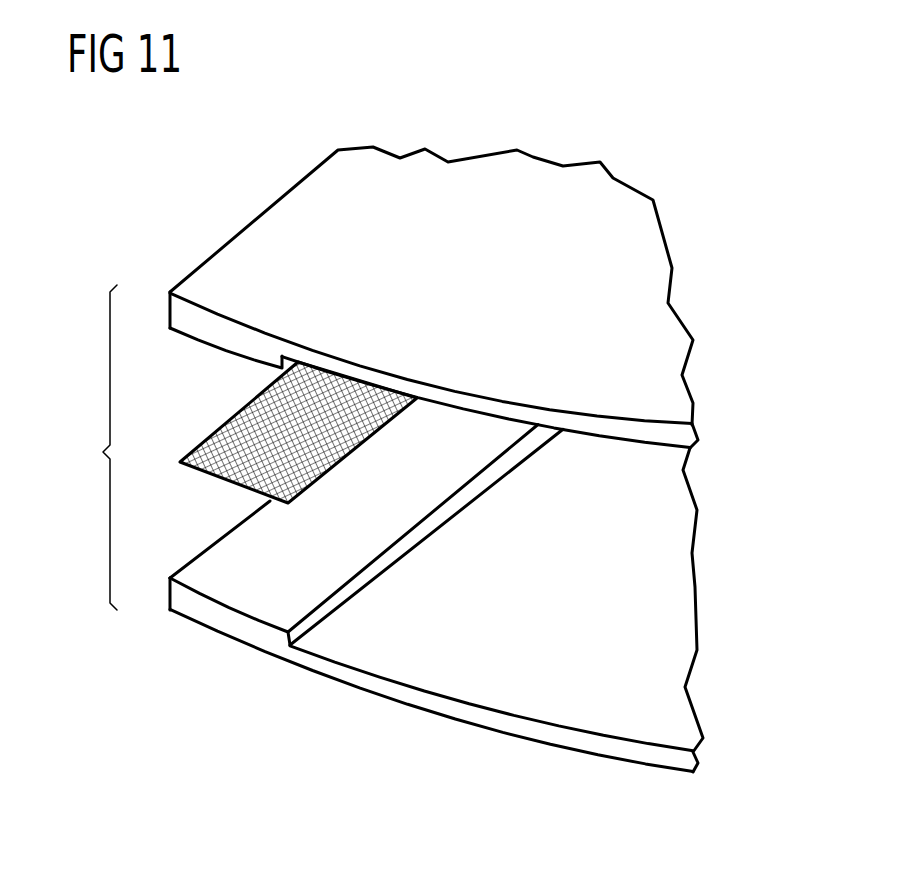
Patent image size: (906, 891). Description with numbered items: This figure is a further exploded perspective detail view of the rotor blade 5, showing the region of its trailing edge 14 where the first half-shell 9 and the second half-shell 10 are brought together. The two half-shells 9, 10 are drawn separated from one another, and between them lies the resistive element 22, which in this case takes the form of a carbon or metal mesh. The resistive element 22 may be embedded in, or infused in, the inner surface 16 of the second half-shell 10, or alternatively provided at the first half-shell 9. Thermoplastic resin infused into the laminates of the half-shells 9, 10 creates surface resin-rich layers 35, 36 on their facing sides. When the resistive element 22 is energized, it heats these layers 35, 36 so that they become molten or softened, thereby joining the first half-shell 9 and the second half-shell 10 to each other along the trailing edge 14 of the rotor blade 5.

The rotor blade 5 is at (109, 177).
The first half-shell 9 is at (543, 146).
The second half-shell 10 is at (359, 704).
The trailing edge 14 is at (95, 447).
The inner surface 16 is at (679, 602).
The resistive element 22 is at (189, 452).
The surface resin-rich layer 35 is at (218, 350).
The surface resin-rich layer 36 is at (212, 560).